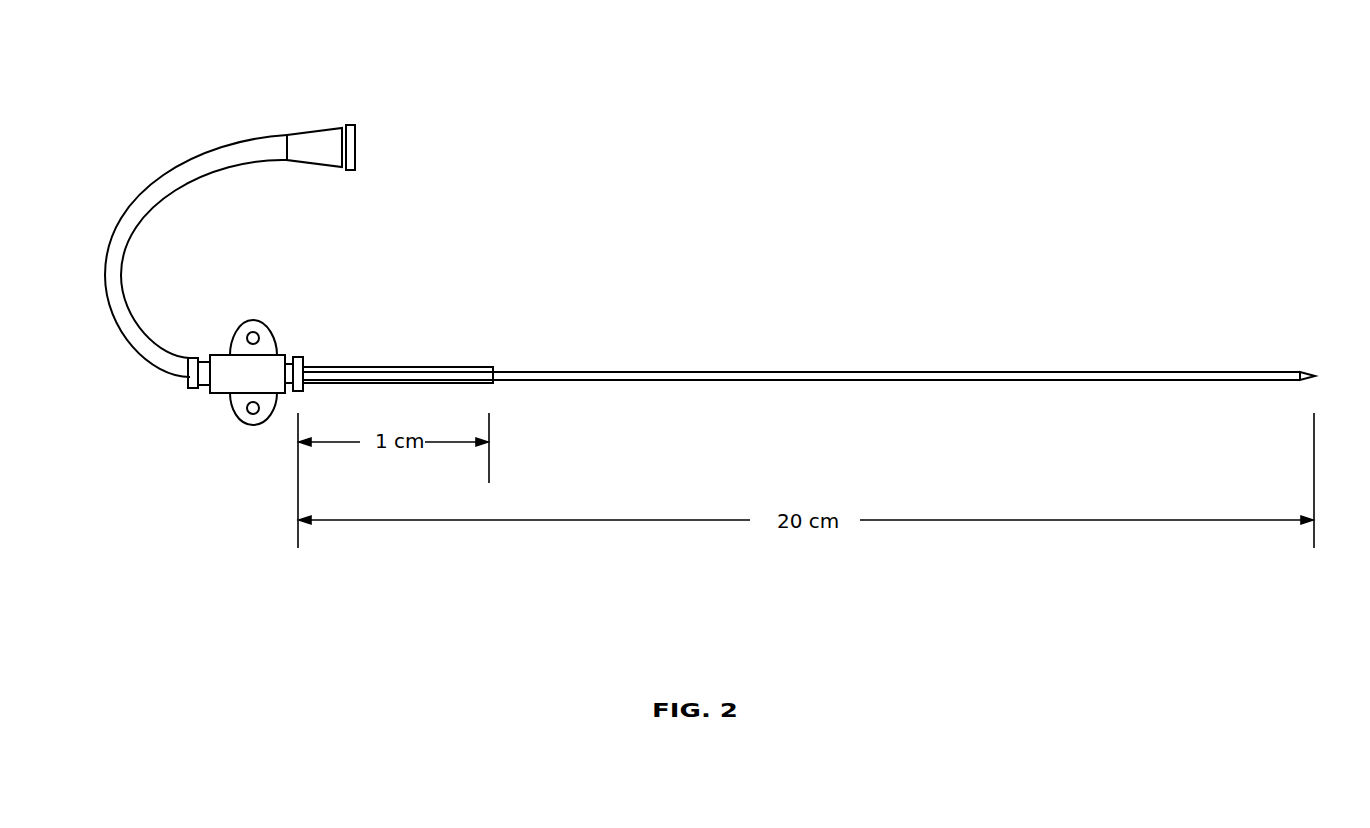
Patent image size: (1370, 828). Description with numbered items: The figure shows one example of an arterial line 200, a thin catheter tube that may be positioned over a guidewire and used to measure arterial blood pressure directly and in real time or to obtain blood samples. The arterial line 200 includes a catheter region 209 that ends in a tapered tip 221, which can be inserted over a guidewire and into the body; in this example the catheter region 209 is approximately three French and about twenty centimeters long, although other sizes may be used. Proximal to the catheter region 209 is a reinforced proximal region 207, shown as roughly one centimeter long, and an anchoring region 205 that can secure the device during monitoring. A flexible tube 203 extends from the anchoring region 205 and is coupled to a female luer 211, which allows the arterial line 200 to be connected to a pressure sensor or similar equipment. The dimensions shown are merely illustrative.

The arterial line 200 is at (849, 78).
The 3.5 inch PVC tubing 203 is at (155, 192).
The anchoring region 205 is at (262, 320).
The reinforced proximal region 207 is at (427, 368).
The catheter region 209 is at (878, 372).
The female luer 211 is at (372, 133).
The tapered tip 221 is at (1311, 354).